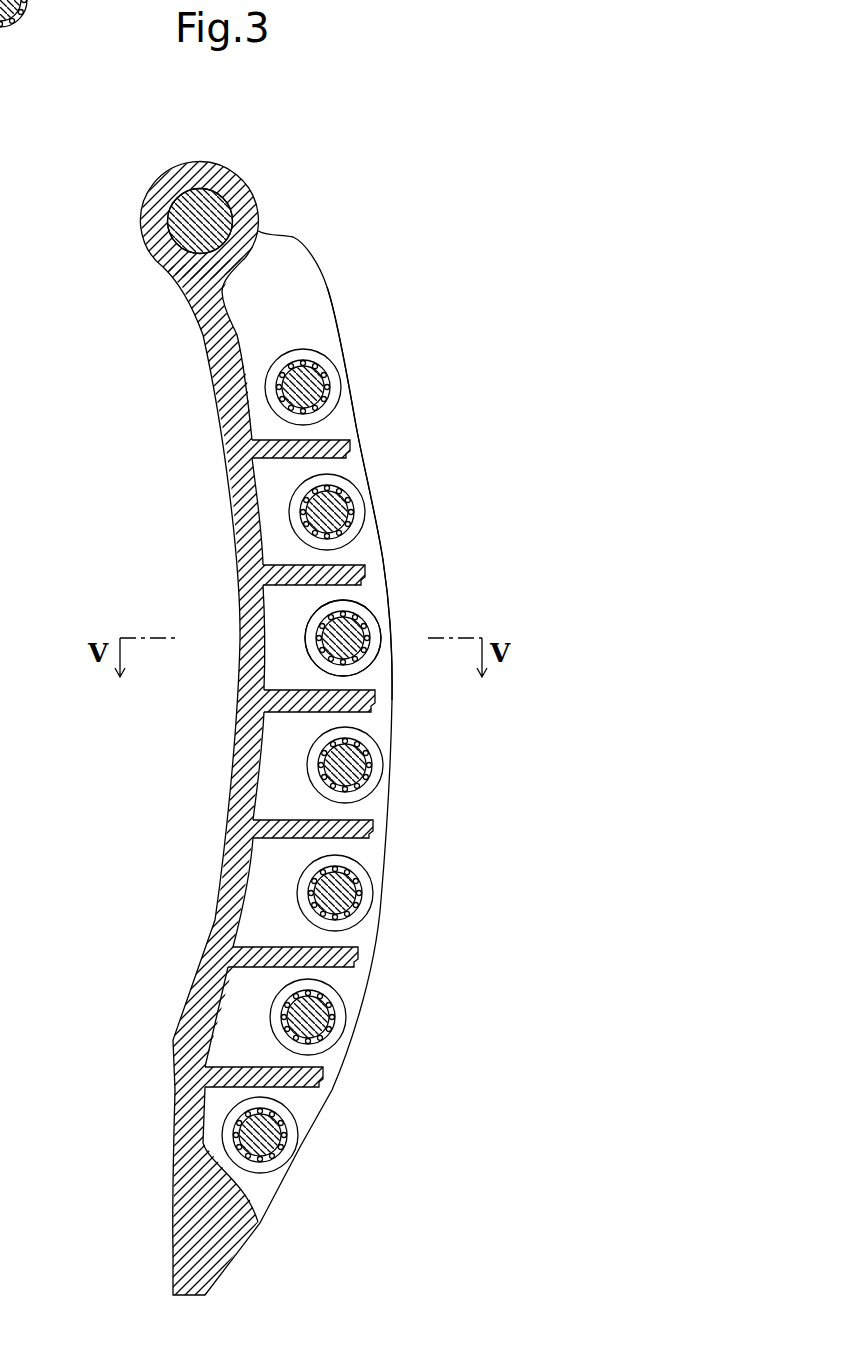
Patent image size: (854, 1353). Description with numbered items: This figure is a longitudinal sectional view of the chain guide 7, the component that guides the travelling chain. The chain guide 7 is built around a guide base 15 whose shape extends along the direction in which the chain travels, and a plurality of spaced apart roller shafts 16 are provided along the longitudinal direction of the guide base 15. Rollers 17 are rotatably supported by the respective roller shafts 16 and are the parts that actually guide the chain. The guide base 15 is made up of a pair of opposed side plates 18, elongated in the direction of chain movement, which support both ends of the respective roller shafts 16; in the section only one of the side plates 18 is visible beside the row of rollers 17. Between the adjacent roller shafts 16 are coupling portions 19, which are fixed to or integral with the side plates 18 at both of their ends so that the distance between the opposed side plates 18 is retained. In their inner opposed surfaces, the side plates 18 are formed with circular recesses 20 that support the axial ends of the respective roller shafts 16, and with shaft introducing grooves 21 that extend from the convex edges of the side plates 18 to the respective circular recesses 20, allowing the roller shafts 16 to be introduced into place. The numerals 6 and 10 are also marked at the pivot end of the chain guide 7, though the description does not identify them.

The pivot shaft 6 is at (190, 208).
The chain guide 7 is at (277, 233).
The boss with pivot hole 10 is at (187, 238).
The guide base 15 is at (233, 447).
The roller shaft 16 is at (277, 388).
The roller 17 is at (318, 357).
The side plate 18 is at (347, 423).
The coupling portion 19 is at (350, 450).
The circular recess 20 is at (328, 667).
The shaft introducing groove 21 is at (387, 653).